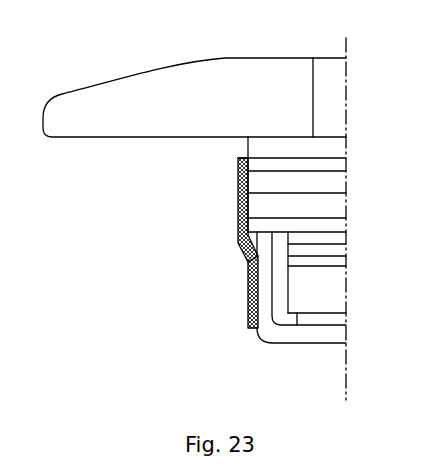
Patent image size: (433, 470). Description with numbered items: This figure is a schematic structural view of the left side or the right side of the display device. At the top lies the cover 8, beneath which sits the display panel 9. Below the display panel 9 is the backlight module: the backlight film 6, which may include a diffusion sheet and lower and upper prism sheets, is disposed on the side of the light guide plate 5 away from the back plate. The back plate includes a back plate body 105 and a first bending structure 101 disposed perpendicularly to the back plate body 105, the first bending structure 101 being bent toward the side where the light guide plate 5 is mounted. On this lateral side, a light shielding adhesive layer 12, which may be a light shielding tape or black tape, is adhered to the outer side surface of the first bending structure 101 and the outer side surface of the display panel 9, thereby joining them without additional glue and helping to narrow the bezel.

The cover 8 is at (212, 77).
The display panel 9 is at (352, 175).
The light shielding adhesive layer 12 is at (240, 216).
The back plate body 105 is at (265, 312).
The backlight film 6 is at (353, 238).
The light guide plate 5 is at (333, 293).
The first bending structure 101 is at (320, 335).